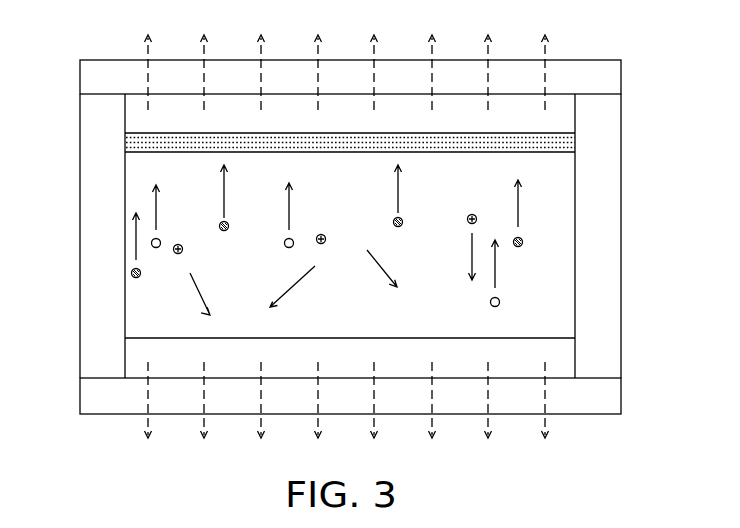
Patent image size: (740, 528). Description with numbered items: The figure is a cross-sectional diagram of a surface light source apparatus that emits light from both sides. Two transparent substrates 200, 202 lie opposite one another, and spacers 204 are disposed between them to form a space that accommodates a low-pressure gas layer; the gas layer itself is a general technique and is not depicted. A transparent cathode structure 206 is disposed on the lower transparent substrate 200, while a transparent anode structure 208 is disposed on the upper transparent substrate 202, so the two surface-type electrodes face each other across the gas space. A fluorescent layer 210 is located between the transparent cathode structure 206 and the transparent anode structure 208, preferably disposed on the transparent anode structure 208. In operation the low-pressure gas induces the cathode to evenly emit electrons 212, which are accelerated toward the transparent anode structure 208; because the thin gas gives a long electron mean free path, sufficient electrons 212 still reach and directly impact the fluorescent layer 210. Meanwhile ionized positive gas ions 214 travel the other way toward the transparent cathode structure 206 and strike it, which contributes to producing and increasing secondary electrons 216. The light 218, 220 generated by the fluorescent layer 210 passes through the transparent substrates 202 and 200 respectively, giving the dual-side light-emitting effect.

The transparent substrate 200 is at (608, 397).
The transparent substrate 202 is at (610, 68).
The spacers 204 is at (608, 257).
The transparent cathode structure 206 is at (567, 353).
The transparent anode structure 208 is at (565, 121).
The fluorescent layer 210 is at (575, 140).
The electrons 212 is at (130, 275).
The positive gas ions 214 is at (178, 256).
The secondary electrons 216 is at (502, 302).
The light 218 is at (147, 72).
The light 220 is at (545, 398).